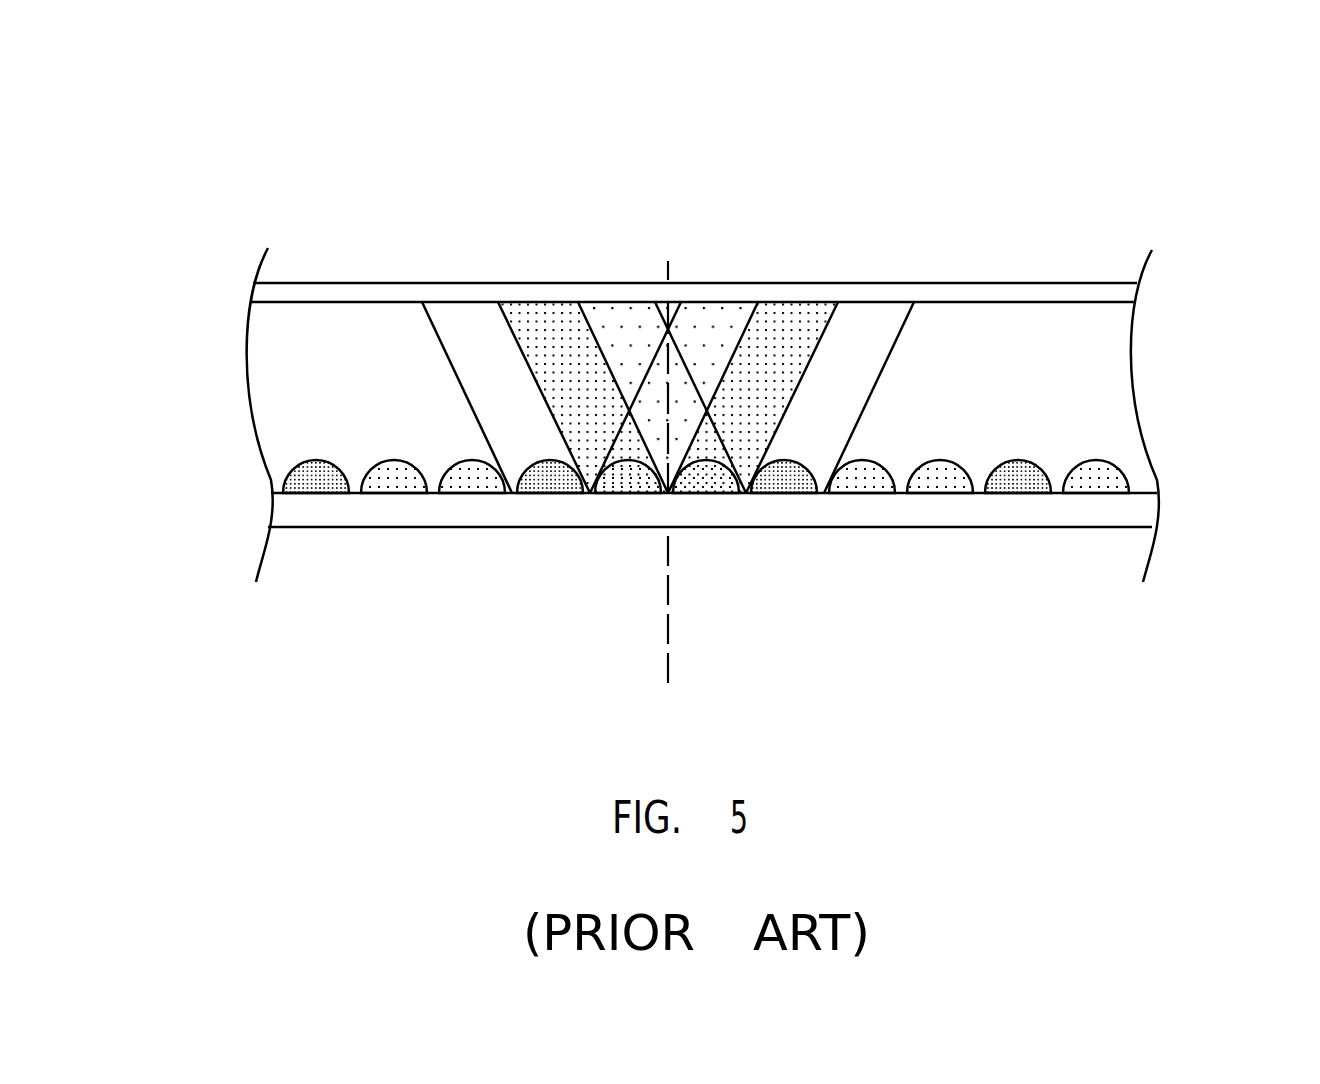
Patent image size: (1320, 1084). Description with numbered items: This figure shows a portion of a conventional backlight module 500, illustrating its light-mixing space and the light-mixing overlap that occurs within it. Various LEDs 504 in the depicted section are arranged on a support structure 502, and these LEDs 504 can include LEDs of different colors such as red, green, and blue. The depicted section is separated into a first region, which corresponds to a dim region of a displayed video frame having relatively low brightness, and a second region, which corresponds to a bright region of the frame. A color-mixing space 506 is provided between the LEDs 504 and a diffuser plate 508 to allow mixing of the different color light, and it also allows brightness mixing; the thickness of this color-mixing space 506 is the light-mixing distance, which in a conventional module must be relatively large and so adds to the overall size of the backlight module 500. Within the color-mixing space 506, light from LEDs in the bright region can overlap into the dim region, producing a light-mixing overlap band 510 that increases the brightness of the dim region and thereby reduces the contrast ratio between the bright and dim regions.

The backlight module 500 is at (395, 168).
The support structure 502 is at (1135, 507).
The LEDs 504 is at (863, 476).
The color-mixing space 506 is at (358, 380).
The diffuser plate 508 is at (1123, 292).
The light-mixing overlap band 510 is at (760, 245).